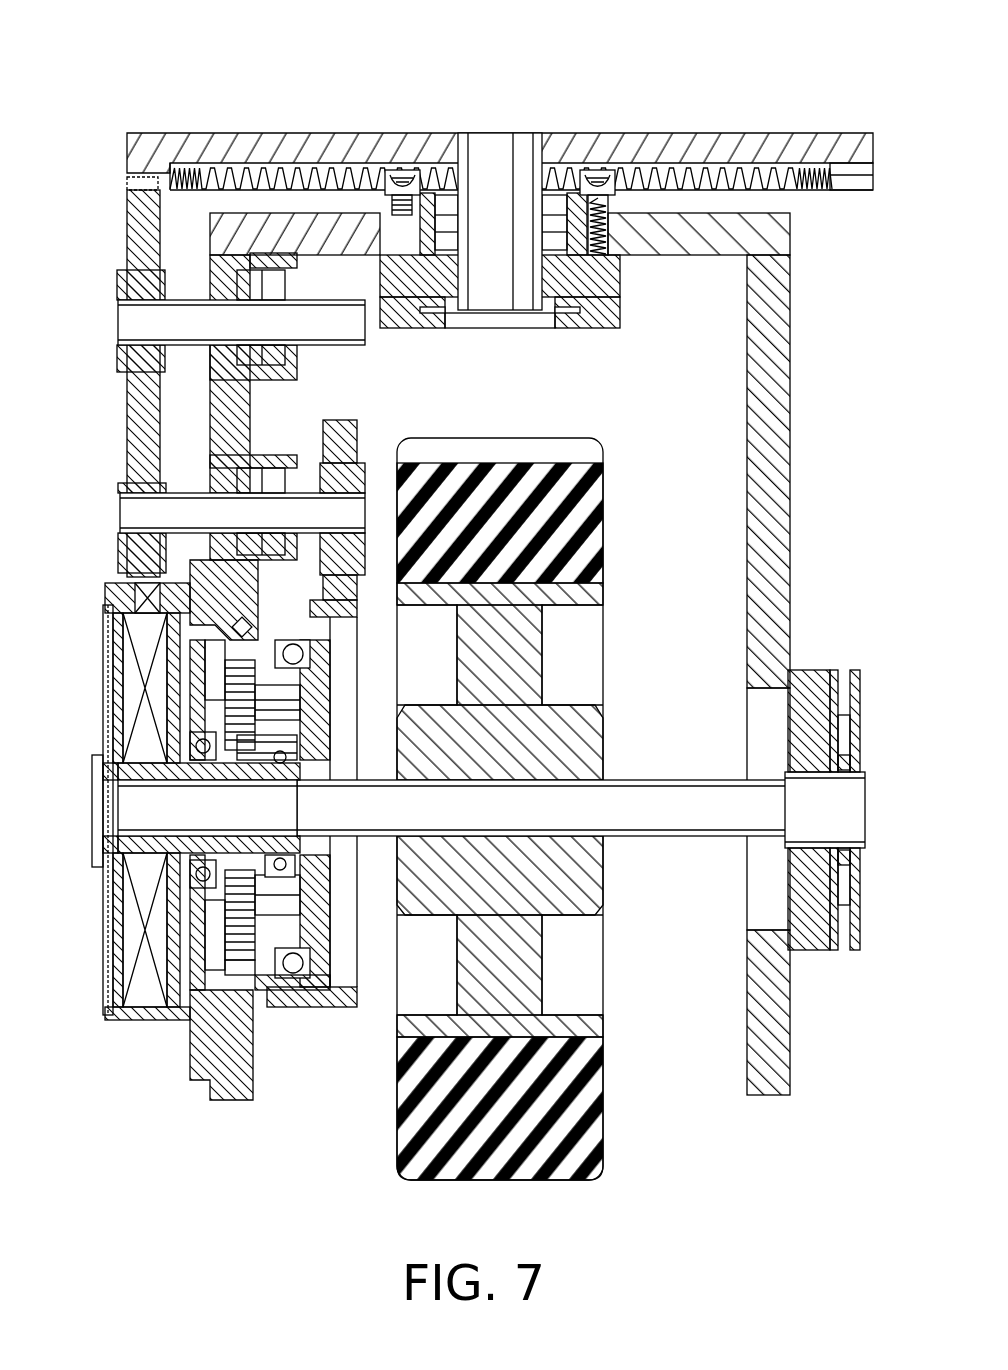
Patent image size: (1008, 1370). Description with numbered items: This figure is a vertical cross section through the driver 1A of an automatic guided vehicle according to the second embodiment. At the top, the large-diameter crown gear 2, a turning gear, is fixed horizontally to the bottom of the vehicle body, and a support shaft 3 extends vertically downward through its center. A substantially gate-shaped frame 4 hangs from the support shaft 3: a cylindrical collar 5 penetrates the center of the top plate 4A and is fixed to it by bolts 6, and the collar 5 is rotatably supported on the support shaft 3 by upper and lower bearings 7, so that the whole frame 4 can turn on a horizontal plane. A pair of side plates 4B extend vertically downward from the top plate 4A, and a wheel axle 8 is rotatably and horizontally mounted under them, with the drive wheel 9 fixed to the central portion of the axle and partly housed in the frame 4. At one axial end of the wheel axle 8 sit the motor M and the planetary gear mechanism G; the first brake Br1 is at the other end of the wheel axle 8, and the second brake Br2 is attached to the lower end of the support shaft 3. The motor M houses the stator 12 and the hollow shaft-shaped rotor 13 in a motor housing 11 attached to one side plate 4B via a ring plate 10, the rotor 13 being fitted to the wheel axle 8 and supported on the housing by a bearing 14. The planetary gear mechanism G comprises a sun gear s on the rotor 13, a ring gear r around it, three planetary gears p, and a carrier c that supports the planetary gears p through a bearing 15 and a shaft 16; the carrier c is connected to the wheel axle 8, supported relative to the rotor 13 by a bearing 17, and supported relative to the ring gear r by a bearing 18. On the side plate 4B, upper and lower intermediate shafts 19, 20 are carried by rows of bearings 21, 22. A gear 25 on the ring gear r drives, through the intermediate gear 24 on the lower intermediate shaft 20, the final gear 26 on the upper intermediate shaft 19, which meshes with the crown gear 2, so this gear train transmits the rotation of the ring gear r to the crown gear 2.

The driver 1A is at (768, 83).
The crown gear 2 is at (818, 192).
The support shaft 3 is at (500, 302).
The frame 4 is at (491, 585).
The top plate 4A is at (303, 213).
The side plates 4B is at (228, 410).
The collar 5 is at (428, 235).
The bolts 6 is at (400, 172).
The bearings 7 is at (560, 228).
The wheel axle 8 is at (718, 827).
The wheel 9 is at (603, 1115).
The ring plate 10 is at (197, 1062).
The motor housing 11 is at (103, 984).
The stator 12 is at (135, 935).
The rotor 13 is at (110, 850).
The bearing 14 is at (192, 866).
The bearing 15 is at (258, 632).
The shaft 16 is at (290, 698).
The bearing 17 is at (282, 864).
The bearing 18 is at (292, 970).
The upper intermediate shaft 19 is at (343, 336).
The lower intermediate shaft 20 is at (357, 500).
The bearings 21 is at (275, 290).
The bearings 22 is at (270, 470).
The intermediate gear 24 is at (122, 550).
The gear 25 is at (335, 1010).
The final gear 26 is at (127, 415).
The motor M is at (152, 801).
The planetary gear mechanism G is at (236, 838).
The first brake Br1 is at (860, 675).
The second brake Br2 is at (590, 322).
The sun gear s is at (265, 753).
The carrier c is at (262, 897).
The planetary gears p is at (225, 950).
The ring gear r is at (320, 1012).